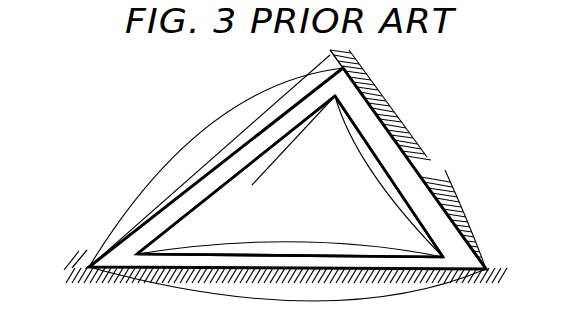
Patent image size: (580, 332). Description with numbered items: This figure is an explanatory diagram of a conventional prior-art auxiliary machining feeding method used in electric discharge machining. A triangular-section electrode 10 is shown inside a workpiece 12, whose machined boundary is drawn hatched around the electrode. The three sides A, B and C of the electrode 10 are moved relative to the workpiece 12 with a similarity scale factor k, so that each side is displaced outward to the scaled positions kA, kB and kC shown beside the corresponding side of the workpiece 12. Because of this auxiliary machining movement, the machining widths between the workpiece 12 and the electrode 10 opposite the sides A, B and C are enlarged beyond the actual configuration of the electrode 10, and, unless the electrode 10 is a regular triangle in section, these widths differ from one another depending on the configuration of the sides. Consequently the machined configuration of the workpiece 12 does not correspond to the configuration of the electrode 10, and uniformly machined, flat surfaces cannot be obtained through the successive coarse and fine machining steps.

The electrode 10 is at (311, 183).
The workpiece 12 is at (446, 171).
The side A is at (389, 176).
The side B is at (236, 175).
The side C is at (290, 243).
The scaled side kA is at (417, 159).
The scaled side kB is at (216, 161).
The scaled side kC is at (287, 289).